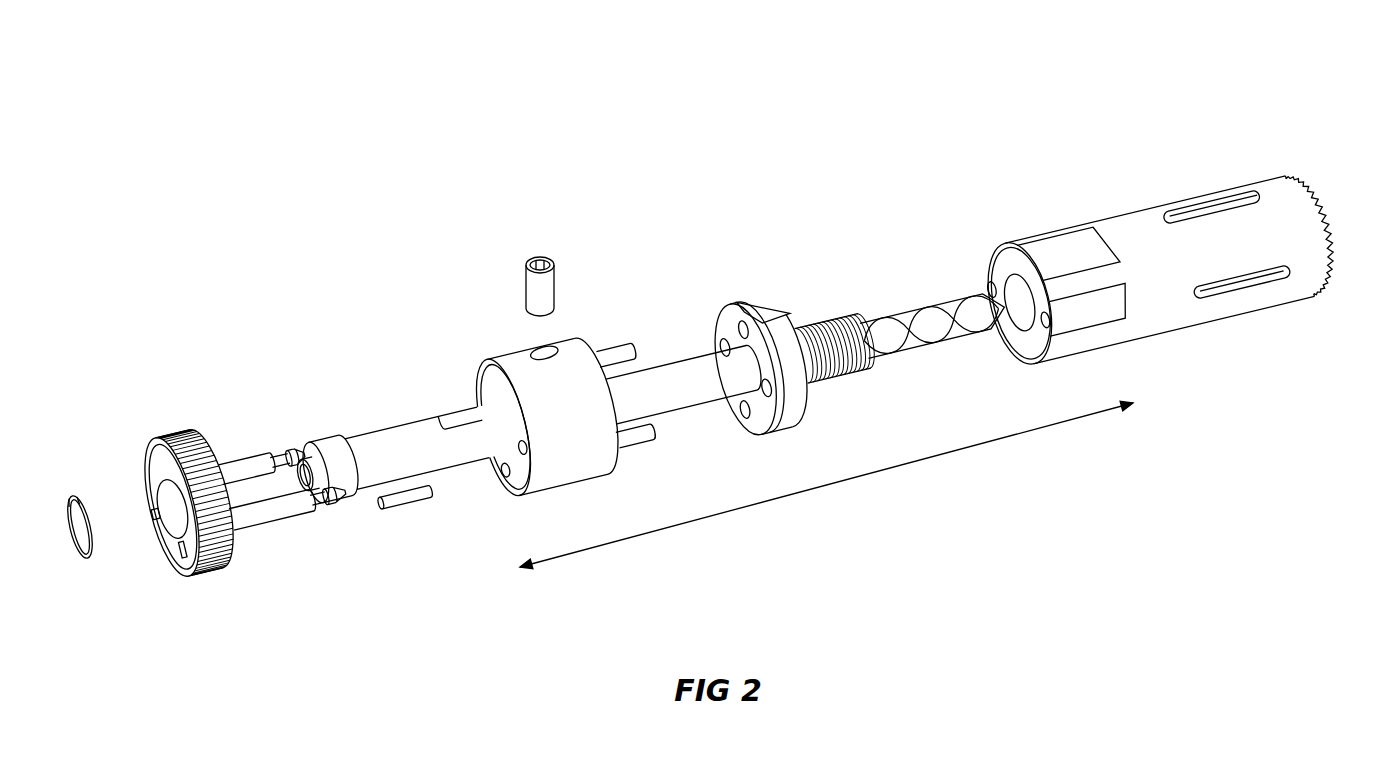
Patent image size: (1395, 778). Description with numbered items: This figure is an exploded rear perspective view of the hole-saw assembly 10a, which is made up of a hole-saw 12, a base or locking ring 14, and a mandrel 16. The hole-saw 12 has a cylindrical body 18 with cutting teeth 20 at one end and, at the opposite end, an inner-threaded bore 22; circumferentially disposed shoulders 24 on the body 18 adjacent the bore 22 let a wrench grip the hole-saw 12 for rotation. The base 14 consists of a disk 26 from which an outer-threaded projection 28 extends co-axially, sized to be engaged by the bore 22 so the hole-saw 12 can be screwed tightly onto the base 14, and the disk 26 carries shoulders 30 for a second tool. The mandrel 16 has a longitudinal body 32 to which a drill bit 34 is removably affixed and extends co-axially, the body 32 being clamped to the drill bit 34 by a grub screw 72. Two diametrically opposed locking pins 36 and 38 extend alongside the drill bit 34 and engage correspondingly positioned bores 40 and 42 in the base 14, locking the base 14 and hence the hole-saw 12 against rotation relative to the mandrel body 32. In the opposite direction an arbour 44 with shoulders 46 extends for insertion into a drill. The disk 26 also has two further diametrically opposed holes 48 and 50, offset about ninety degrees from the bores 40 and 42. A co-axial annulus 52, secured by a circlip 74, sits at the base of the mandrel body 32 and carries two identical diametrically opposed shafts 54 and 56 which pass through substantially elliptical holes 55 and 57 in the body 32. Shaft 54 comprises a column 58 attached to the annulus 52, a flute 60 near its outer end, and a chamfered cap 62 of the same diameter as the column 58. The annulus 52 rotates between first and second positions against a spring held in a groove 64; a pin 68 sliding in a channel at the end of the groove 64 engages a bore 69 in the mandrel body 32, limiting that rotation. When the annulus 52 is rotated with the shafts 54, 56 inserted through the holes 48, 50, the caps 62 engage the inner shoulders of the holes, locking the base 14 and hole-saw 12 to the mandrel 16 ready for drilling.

The hole-saw assembly 10a is at (672, 105).
The hole-saw 12 is at (1213, 348).
The base or locking ring 14 is at (790, 278).
The mandrel 16 is at (613, 318).
The cylindrical body 18 is at (1158, 235).
The cutting teeth 20 is at (1335, 268).
The threaded bore 22 is at (1003, 247).
The shoulders 24 is at (1058, 247).
The disk 26 is at (762, 422).
The threaded projection 28 is at (860, 372).
The shoulders 30 is at (770, 300).
The longitudinal body 32 is at (569, 470).
The drill bit 34 is at (943, 303).
The locking pin 36 is at (640, 350).
The locking pin 38 is at (636, 446).
The bore 40 is at (735, 308).
The bore 42 is at (740, 416).
The arbour 44 is at (462, 412).
The shoulders 46 is at (387, 430).
The hole 48 is at (720, 334).
The hole 50 is at (782, 398).
The co-axial annulus 52 is at (157, 450).
The shaft 54 is at (252, 432).
The elliptical hole 55 is at (486, 384).
The shaft 56 is at (268, 517).
The elliptical hole 57 is at (525, 490).
The column 58 is at (237, 463).
The flute 60 is at (282, 447).
The chamfered cap 62 is at (304, 446).
The groove 64 is at (176, 548).
The pin 68 is at (406, 501).
The bore 69 is at (502, 478).
The grub screw 72 is at (556, 283).
The circlip 74 is at (78, 556).